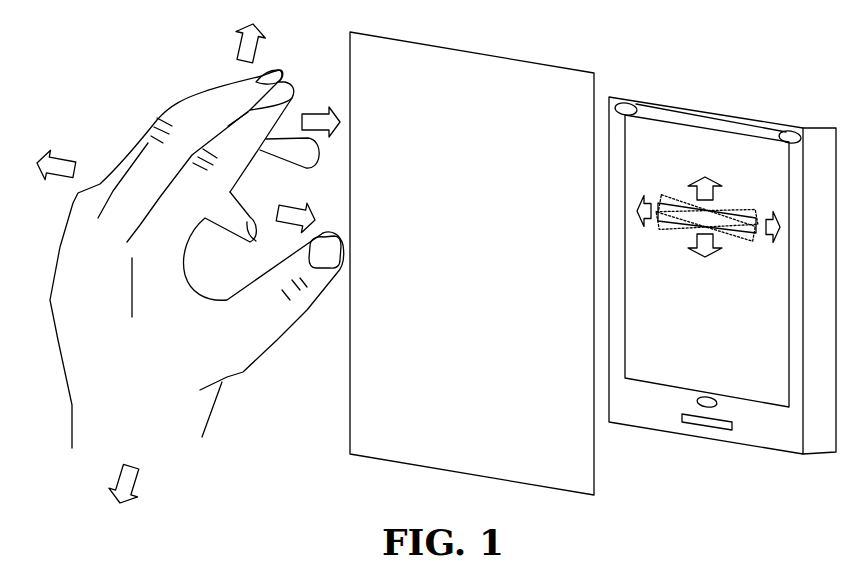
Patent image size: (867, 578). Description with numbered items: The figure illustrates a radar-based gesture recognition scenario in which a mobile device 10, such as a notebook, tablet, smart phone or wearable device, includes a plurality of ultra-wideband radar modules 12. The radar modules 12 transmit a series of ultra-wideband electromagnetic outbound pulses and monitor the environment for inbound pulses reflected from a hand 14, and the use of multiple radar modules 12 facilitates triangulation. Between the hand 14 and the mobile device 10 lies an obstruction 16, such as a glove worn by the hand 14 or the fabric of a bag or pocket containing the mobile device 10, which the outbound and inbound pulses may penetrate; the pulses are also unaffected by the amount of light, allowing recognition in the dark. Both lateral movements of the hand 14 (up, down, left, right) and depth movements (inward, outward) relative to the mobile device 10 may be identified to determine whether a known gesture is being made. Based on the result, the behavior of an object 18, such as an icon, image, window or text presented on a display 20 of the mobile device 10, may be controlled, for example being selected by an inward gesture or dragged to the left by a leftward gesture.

The mobile device 10 is at (740, 113).
The ultra-wideband (UWB) radar modules 12 is at (626, 103).
The hand 14 is at (197, 412).
The obstruction 16 is at (474, 268).
The object 18 is at (662, 222).
The display 20 is at (773, 407).